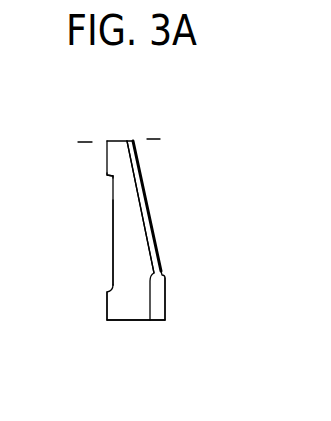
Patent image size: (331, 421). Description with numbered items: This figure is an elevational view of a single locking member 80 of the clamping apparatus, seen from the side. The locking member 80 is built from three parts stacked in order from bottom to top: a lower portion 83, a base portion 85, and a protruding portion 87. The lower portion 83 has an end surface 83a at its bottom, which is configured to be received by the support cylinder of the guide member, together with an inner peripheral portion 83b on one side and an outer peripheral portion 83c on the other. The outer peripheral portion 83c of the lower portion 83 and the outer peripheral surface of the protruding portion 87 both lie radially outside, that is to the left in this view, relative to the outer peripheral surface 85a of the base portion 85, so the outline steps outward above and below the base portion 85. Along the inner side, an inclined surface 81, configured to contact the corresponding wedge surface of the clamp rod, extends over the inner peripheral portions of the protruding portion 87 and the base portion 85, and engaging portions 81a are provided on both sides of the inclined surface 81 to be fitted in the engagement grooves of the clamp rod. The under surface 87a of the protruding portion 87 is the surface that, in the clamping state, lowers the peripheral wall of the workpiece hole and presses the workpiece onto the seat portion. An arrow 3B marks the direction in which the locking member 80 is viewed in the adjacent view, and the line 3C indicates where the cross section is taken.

The locking member 80 is at (134, 241).
The inclined surface 81 is at (150, 196).
The engaging portions 81a is at (153, 218).
The lower portion 83 is at (105, 313).
The end surface 83a is at (136, 322).
The inner peripheral portion 83b is at (166, 306).
The outer peripheral portion 83c is at (107, 300).
The base portion 85 is at (115, 233).
The outer peripheral surface 85a is at (112, 262).
The protruding portion 87 is at (110, 164).
The under surface 87a is at (108, 178).
The arrow 3B is at (220, 258).
The line 3C- 3C is at (85, 138).